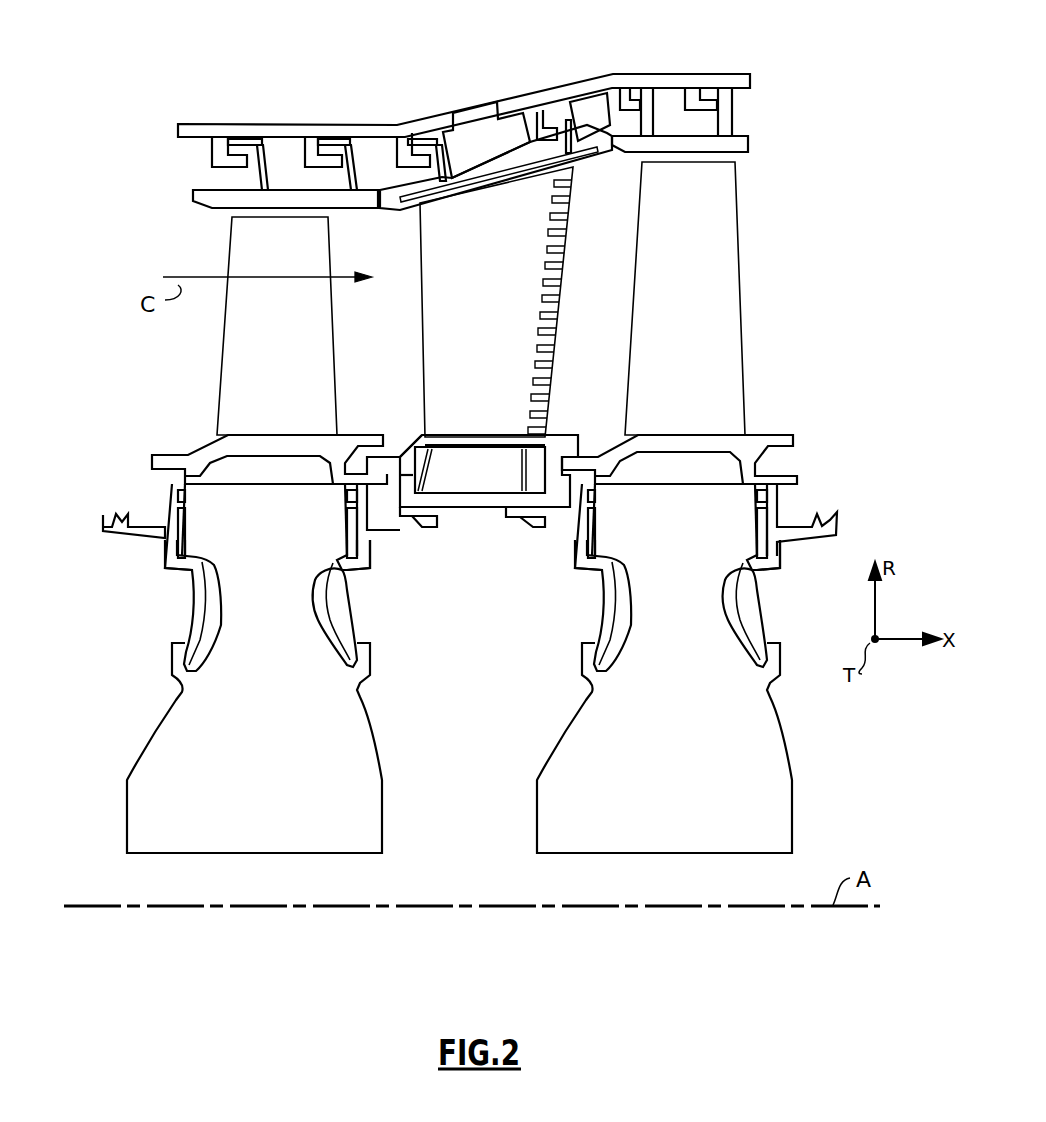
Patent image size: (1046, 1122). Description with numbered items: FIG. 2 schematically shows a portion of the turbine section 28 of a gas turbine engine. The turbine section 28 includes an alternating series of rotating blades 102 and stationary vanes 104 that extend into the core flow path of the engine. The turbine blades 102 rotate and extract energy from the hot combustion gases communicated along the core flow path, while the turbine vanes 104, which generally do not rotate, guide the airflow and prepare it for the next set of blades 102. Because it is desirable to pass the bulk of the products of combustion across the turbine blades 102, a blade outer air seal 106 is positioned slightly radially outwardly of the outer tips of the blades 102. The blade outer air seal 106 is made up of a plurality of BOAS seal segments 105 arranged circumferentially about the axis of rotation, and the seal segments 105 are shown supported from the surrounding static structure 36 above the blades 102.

The turbine section 28 is at (95, 58).
The engine static structure / case 36 is at (355, 108).
The rotating blades 102 is at (322, 355).
The stationary vanes 104 is at (530, 325).
The BOAS seal segments 105 is at (215, 198).
The blade outer air seal 106 is at (185, 228).